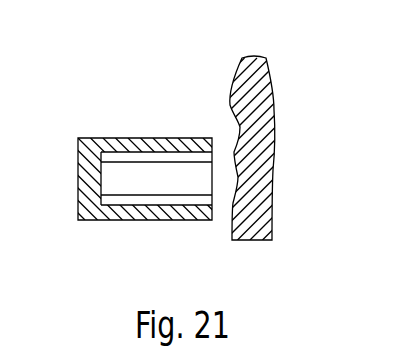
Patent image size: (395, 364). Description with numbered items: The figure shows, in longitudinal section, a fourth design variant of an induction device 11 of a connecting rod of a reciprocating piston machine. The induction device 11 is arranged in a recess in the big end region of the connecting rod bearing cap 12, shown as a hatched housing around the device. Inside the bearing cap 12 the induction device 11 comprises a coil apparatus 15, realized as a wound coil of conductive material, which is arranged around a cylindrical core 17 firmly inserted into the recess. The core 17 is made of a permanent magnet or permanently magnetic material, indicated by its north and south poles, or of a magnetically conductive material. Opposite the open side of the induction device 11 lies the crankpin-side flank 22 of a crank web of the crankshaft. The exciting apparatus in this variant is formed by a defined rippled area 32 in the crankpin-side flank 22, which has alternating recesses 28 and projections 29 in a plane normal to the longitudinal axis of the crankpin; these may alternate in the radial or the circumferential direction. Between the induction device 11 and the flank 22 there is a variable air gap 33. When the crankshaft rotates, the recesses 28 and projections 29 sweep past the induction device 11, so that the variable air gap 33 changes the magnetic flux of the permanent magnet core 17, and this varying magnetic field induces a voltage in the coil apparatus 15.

The induction device 11 is at (86, 176).
The connecting rod bearing cap 12 is at (128, 147).
The coil apparatus 15 is at (100, 146).
The core 17 is at (138, 182).
The crankpin-side flank 22 is at (253, 125).
The recesses 28 is at (236, 118).
The projections 29 is at (238, 74).
The rippled area 32 is at (238, 178).
The air gap 33 is at (221, 195).